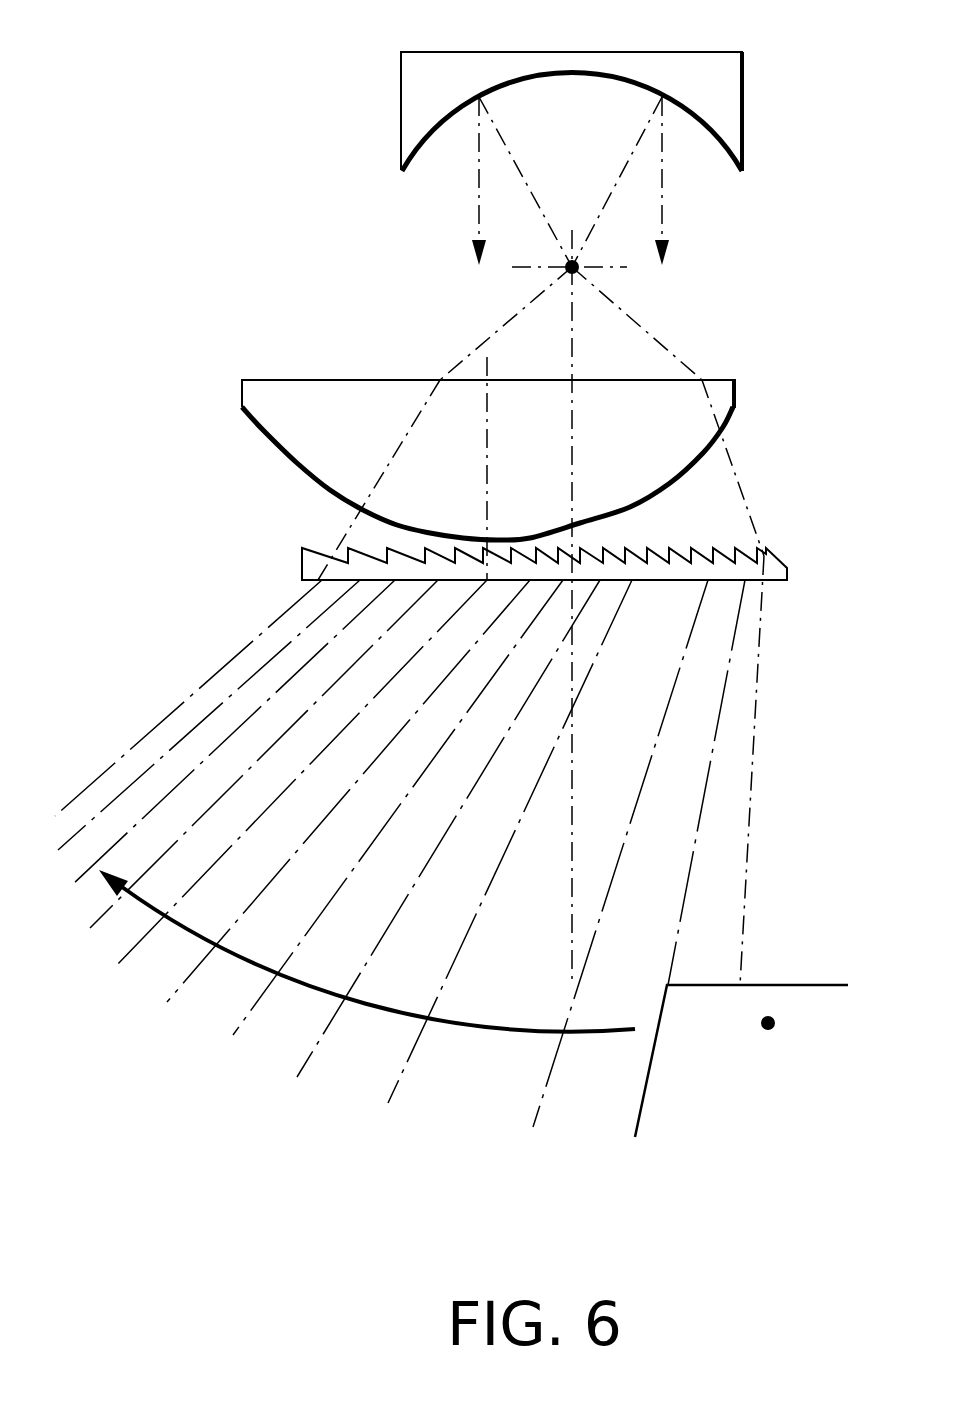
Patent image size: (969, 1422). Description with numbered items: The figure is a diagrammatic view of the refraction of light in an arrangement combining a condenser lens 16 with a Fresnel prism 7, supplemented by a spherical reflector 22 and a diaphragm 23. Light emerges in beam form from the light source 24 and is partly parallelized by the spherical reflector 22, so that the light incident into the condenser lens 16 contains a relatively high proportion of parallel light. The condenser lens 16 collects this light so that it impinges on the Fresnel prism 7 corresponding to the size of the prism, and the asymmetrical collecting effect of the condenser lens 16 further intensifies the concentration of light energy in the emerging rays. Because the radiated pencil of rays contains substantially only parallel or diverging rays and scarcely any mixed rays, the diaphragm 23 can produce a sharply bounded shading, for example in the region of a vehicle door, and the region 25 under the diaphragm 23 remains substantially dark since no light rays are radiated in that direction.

The spherical reflector 22 is at (686, 70).
The condenser lens 16 is at (718, 393).
The Fresnel prism 7 is at (750, 563).
The light source 24 is at (579, 270).
The diaphragm 23 is at (778, 985).
The region under the diaphragm 25 is at (775, 1023).